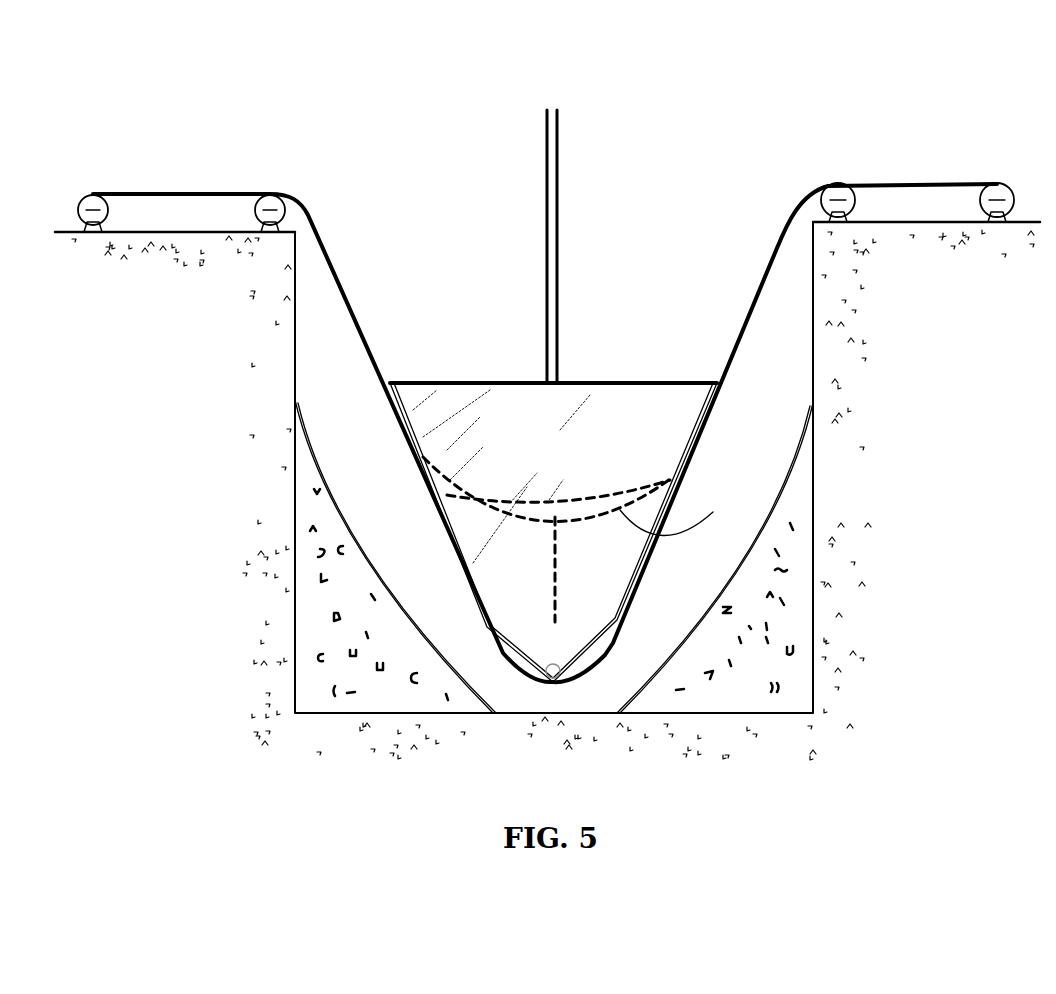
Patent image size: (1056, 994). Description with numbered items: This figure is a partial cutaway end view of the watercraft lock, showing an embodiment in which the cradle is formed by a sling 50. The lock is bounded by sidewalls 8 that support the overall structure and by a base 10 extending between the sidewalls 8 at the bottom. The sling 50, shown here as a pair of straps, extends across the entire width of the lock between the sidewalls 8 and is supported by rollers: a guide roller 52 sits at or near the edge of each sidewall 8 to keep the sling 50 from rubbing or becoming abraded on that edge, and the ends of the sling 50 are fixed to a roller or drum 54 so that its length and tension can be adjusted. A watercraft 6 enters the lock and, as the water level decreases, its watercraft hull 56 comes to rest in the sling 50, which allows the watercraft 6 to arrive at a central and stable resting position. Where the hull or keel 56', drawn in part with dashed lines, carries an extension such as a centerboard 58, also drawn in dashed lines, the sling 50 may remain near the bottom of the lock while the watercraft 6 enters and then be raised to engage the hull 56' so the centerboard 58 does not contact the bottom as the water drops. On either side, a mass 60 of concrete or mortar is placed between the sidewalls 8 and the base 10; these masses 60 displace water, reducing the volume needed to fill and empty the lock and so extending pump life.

The watercraft 6 is at (490, 307).
The sidewalls 8 is at (268, 463).
The base 10 is at (739, 740).
The sling 50 is at (333, 263).
The guide roller 52 is at (277, 207).
The roller or drum 54 is at (83, 203).
The watercraft hull 56 is at (536, 476).
The watercraft hull or keel 56' is at (687, 478).
The centerboard 58 is at (557, 573).
The mass 60 is at (321, 620).